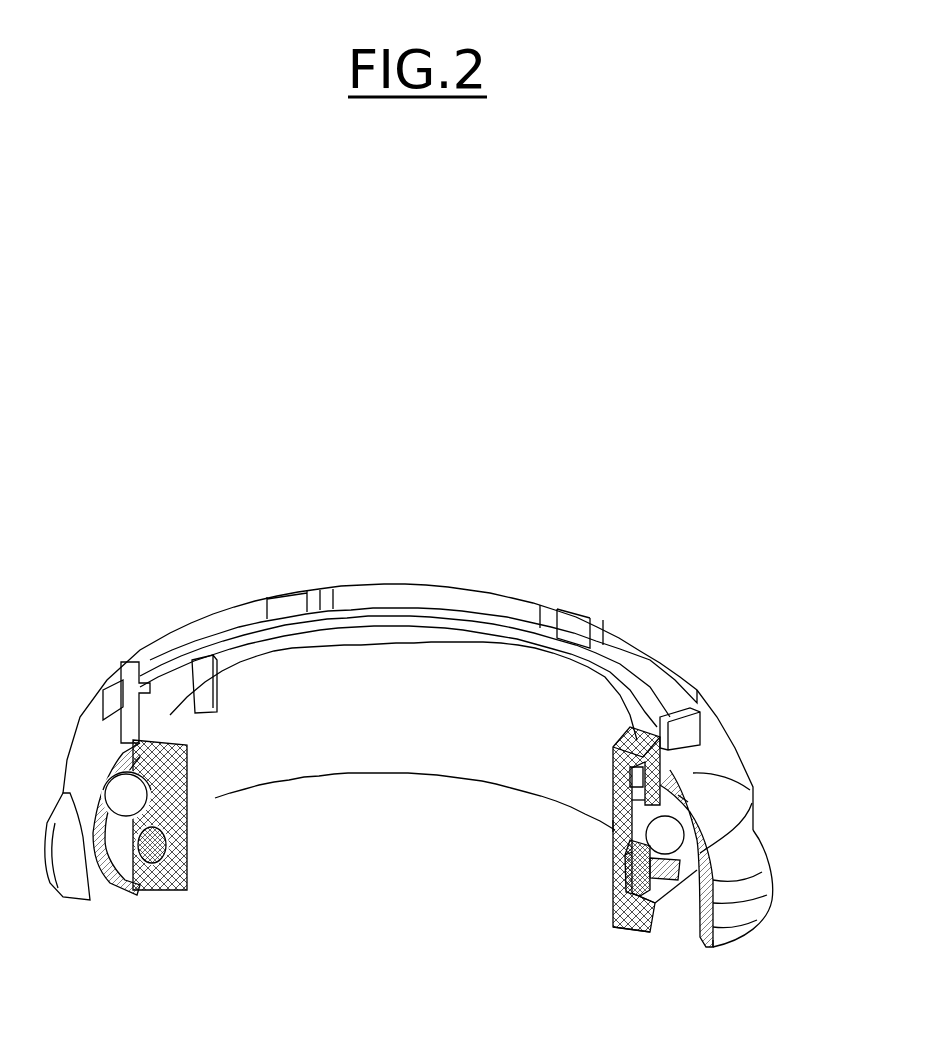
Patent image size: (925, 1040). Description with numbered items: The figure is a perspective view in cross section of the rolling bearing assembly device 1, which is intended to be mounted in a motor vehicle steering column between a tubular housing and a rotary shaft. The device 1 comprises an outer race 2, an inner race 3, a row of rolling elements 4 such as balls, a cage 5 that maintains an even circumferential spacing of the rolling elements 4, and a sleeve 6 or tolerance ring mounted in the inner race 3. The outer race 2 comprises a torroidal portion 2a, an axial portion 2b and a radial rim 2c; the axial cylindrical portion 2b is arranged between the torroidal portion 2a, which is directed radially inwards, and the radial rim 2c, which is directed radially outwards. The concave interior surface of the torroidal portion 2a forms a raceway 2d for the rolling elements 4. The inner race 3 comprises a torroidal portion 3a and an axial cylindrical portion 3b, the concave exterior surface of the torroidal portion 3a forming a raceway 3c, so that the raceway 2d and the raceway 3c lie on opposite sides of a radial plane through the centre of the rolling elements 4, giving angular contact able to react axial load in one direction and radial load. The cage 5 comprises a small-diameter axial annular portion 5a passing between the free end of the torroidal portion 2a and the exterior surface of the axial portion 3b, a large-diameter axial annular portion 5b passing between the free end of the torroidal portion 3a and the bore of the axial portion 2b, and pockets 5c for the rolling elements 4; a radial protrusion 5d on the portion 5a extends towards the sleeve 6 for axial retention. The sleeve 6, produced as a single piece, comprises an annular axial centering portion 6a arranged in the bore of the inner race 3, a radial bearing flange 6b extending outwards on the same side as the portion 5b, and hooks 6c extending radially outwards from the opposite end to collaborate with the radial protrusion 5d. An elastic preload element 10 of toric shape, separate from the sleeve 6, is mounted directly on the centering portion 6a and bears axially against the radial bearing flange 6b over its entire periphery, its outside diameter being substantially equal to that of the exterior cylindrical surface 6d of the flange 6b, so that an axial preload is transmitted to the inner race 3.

The rolling bearing assembly device 1 is at (494, 528).
The outer race 2 is at (766, 818).
The torroidal portion 2a is at (752, 845).
The axial portion 2b is at (741, 933).
The radial rim 2c is at (728, 948).
The raceway 2d is at (683, 797).
The inner race 3 is at (621, 872).
The torroidal portion 3a is at (624, 853).
The axial cylindrical portion 3b is at (616, 800).
The raceway 3c is at (612, 826).
The rolling elements 4 is at (657, 846).
The cage 5 is at (628, 630).
The small-diameter axial annular portion 5a is at (693, 767).
The large-diameter axial annular portion 5b is at (741, 897).
The pockets 5c is at (770, 881).
The radial protrusion 5d is at (700, 723).
The sleeve 6 is at (605, 930).
The annular axial centering portion 6a is at (614, 774).
The radial bearing flange 6b is at (635, 931).
The hooks 6c is at (622, 743).
The exterior cylindrical surface 6d is at (663, 922).
The elastic preload element 10 is at (682, 902).